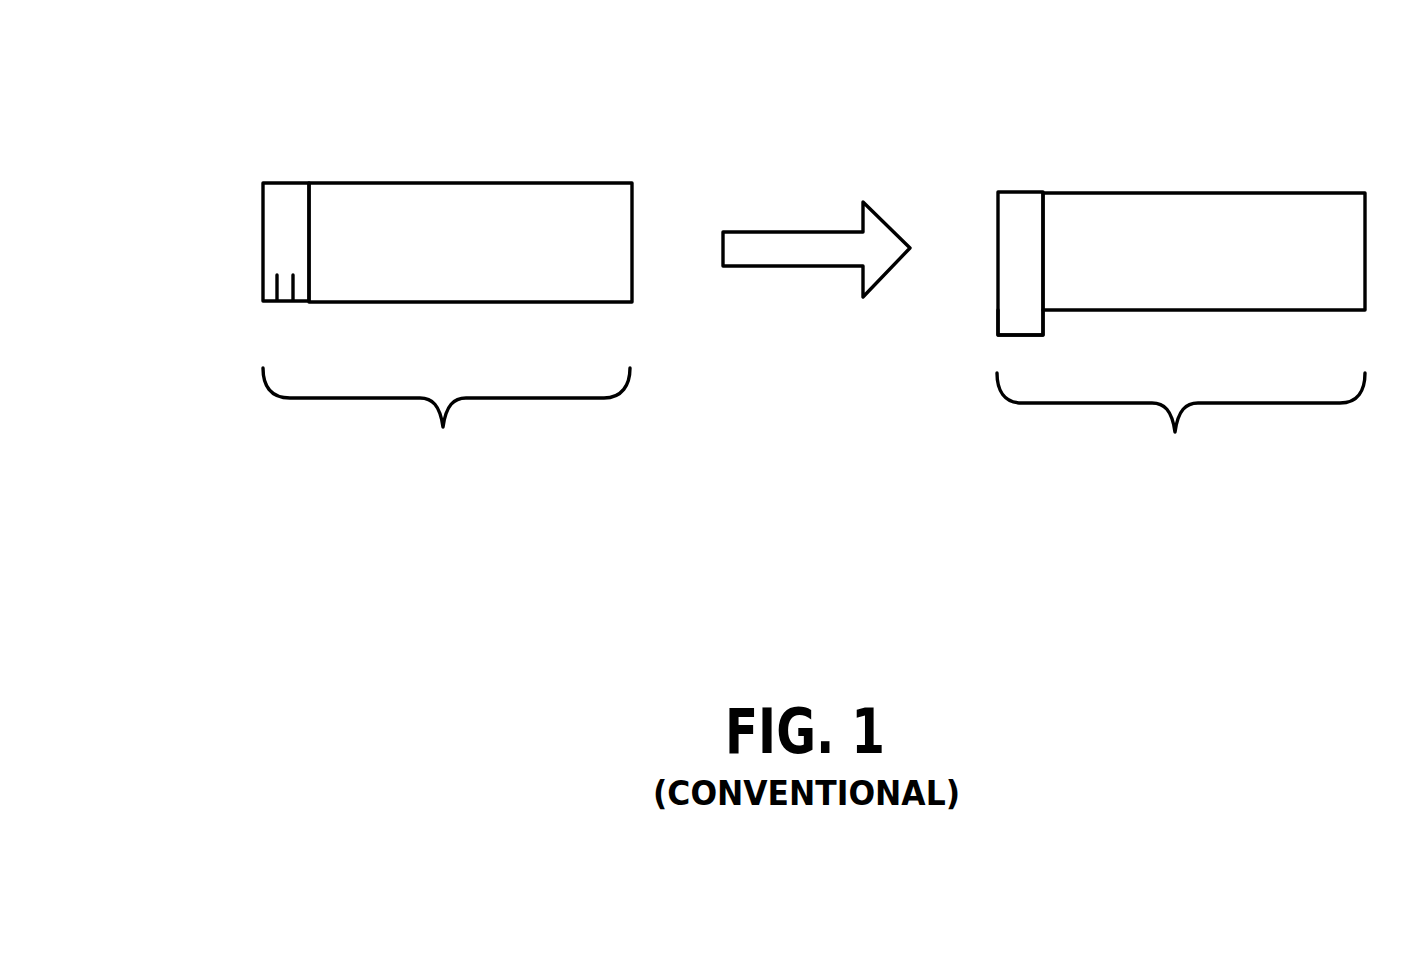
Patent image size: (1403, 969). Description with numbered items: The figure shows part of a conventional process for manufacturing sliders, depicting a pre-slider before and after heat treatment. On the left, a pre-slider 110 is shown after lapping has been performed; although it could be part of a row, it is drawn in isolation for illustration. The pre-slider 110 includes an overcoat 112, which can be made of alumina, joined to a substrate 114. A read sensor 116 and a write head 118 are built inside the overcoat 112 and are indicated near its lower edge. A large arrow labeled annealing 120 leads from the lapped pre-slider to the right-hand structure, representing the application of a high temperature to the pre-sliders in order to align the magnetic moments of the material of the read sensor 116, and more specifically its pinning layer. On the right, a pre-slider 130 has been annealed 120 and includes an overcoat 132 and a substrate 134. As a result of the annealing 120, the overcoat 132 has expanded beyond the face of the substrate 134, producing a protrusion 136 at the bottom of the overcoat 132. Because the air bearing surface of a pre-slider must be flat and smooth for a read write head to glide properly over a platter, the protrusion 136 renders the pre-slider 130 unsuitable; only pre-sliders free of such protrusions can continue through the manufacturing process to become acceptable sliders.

The pre-slider 110 is at (446, 421).
The overcoat 112 is at (240, 160).
The substrate 114 is at (495, 156).
The read sensor 116 is at (267, 301).
The write head 118 is at (303, 301).
The annealing 120 is at (828, 222).
The pre-slider 130 is at (1181, 426).
The overcoat 132 is at (979, 176).
The substrate 134 is at (1230, 166).
The protrusion 136 is at (1071, 332).